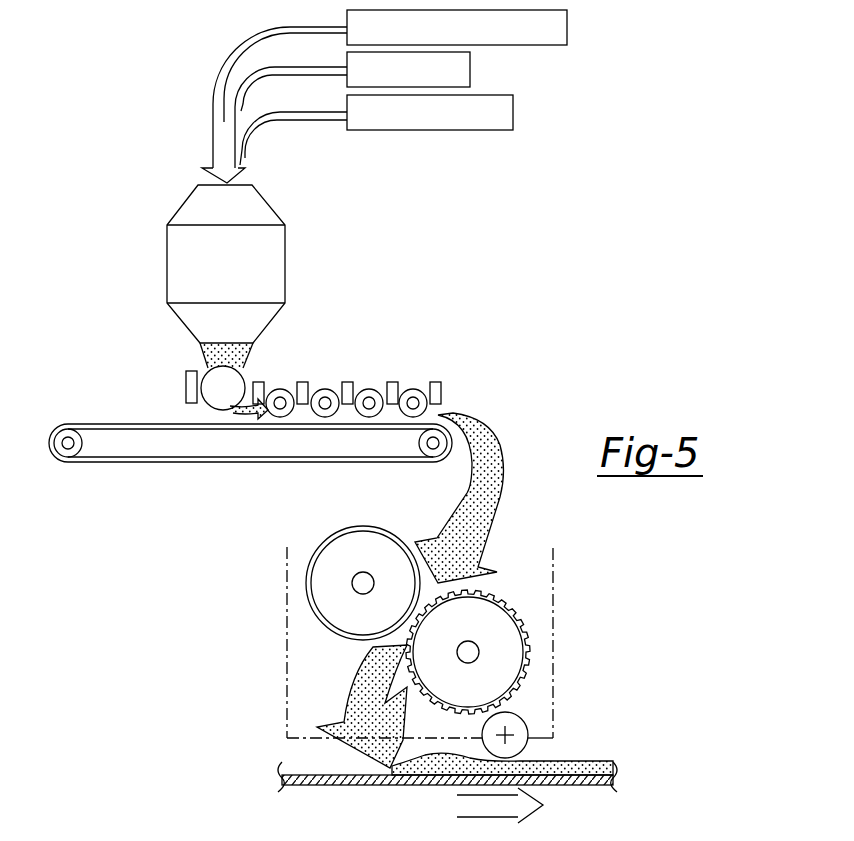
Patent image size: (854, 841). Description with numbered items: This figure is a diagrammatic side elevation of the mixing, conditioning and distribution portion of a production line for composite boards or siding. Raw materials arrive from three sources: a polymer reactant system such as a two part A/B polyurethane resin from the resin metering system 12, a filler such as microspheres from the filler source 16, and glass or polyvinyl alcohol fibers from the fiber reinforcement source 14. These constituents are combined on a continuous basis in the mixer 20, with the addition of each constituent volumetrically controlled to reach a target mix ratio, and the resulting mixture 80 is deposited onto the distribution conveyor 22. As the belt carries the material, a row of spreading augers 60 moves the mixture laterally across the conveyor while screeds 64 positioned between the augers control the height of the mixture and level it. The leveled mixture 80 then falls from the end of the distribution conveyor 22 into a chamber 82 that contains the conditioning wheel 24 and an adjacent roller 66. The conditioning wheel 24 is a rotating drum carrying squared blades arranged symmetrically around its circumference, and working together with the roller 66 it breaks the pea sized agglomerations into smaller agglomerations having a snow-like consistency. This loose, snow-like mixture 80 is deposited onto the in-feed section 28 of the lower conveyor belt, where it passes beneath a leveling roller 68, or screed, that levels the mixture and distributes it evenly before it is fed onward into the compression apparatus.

The resin metering system 12 is at (567, 31).
The filler source 16 is at (470, 73).
The fiber reinforcement source 14 is at (513, 107).
The mixer 20 is at (285, 263).
The distribution conveyor 22 is at (107, 428).
The spreading augers 60 is at (322, 397).
The screeds 64 is at (396, 388).
The mixture 80 is at (502, 487).
The roller 66 is at (325, 592).
The conditioning wheel 24 is at (521, 663).
The leveling roller 68 is at (518, 723).
The chamber 82 is at (287, 640).
The in-feed section 28 is at (316, 775).